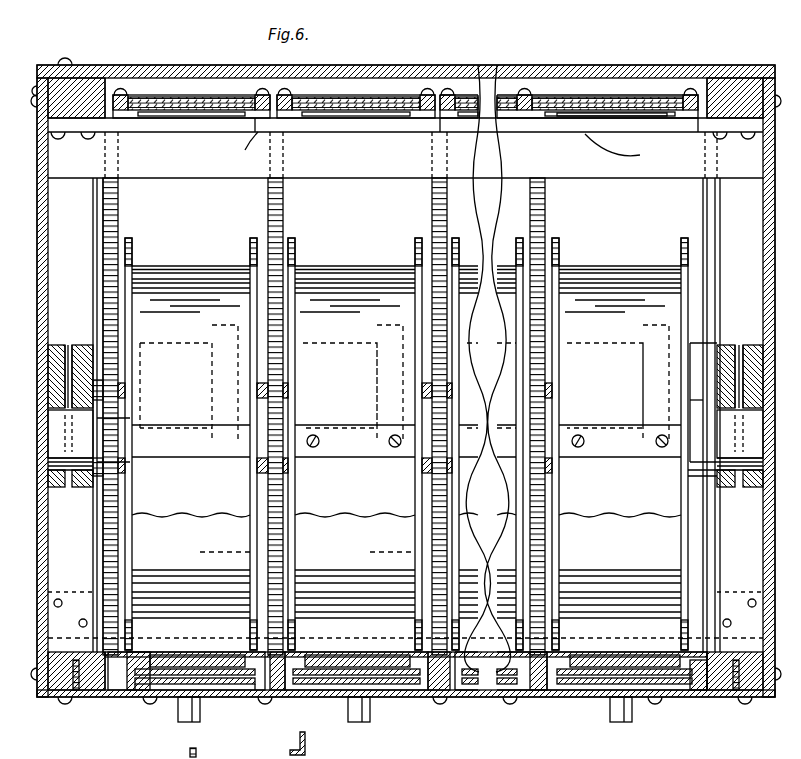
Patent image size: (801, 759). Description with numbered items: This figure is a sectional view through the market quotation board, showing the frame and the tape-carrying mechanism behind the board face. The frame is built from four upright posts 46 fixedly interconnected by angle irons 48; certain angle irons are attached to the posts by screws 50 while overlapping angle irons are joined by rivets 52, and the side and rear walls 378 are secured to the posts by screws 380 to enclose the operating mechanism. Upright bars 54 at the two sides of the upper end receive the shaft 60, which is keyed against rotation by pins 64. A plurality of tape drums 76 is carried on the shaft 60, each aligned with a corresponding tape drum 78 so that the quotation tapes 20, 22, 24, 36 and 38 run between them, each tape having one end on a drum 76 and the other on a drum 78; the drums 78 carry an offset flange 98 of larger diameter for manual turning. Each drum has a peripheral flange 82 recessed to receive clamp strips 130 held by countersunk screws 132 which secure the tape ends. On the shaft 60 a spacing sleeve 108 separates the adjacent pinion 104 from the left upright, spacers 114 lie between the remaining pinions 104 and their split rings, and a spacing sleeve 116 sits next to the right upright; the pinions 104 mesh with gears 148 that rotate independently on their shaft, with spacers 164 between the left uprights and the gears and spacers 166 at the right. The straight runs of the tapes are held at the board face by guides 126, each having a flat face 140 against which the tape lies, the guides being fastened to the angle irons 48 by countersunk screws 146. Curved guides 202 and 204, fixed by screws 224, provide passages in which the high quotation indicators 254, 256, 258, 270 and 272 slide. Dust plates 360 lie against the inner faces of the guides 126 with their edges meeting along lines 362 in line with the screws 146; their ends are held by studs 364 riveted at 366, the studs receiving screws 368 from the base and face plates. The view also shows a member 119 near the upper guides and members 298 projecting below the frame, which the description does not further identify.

The quotation tape 20 is at (160, 655).
The quotation tape 22 is at (318, 655).
The quotation tape 24 is at (470, 660).
The quotation tape 36 is at (540, 690).
The quotation tape 38 is at (618, 515).
The upright post 46 is at (80, 90).
The angle iron 48 is at (118, 190).
The screw 50 is at (70, 137).
The rivet 52 is at (82, 618).
The upright bar 54 is at (50, 370).
The shaft 60 is at (52, 432).
The pin 64 is at (70, 345).
The tape drum 76 is at (208, 266).
The tape drum 78 is at (280, 745).
The peripheral flange 82 is at (209, 750).
The offset flange 98 is at (310, 752).
The pinion 104 is at (125, 445).
The spacing sleeve 108 is at (118, 424).
The spacer 114 is at (238, 396).
The spacing sleeve 116 is at (700, 462).
The plate 119 is at (640, 113).
The guide 126 is at (178, 640).
The clamp strip 130 is at (330, 425).
The screw 132 is at (392, 446).
The face 140 is at (155, 690).
The screw 146 is at (212, 655).
The gear 148 is at (118, 228).
The spacer 164 is at (100, 374).
The spacer 166 is at (700, 345).
The guide 202 is at (170, 95).
The guide 204 is at (252, 135).
The screw 224 is at (122, 92).
The high quotation indicator 254 is at (210, 95).
The high quotation indicator 256 is at (380, 95).
The high quotation indicator 258 is at (468, 95).
The high quotation indicator 270 is at (520, 95).
The high quotation indicator 272 is at (605, 95).
The foot 298 is at (185, 718).
The dust plate 360 is at (240, 640).
The meeting line 362 is at (352, 640).
The stud 364 is at (278, 690).
The riveted shank 366 is at (300, 640).
The screw 368 is at (440, 697).
The side and rear wall 378 is at (36, 83).
The screw 380 is at (65, 60).